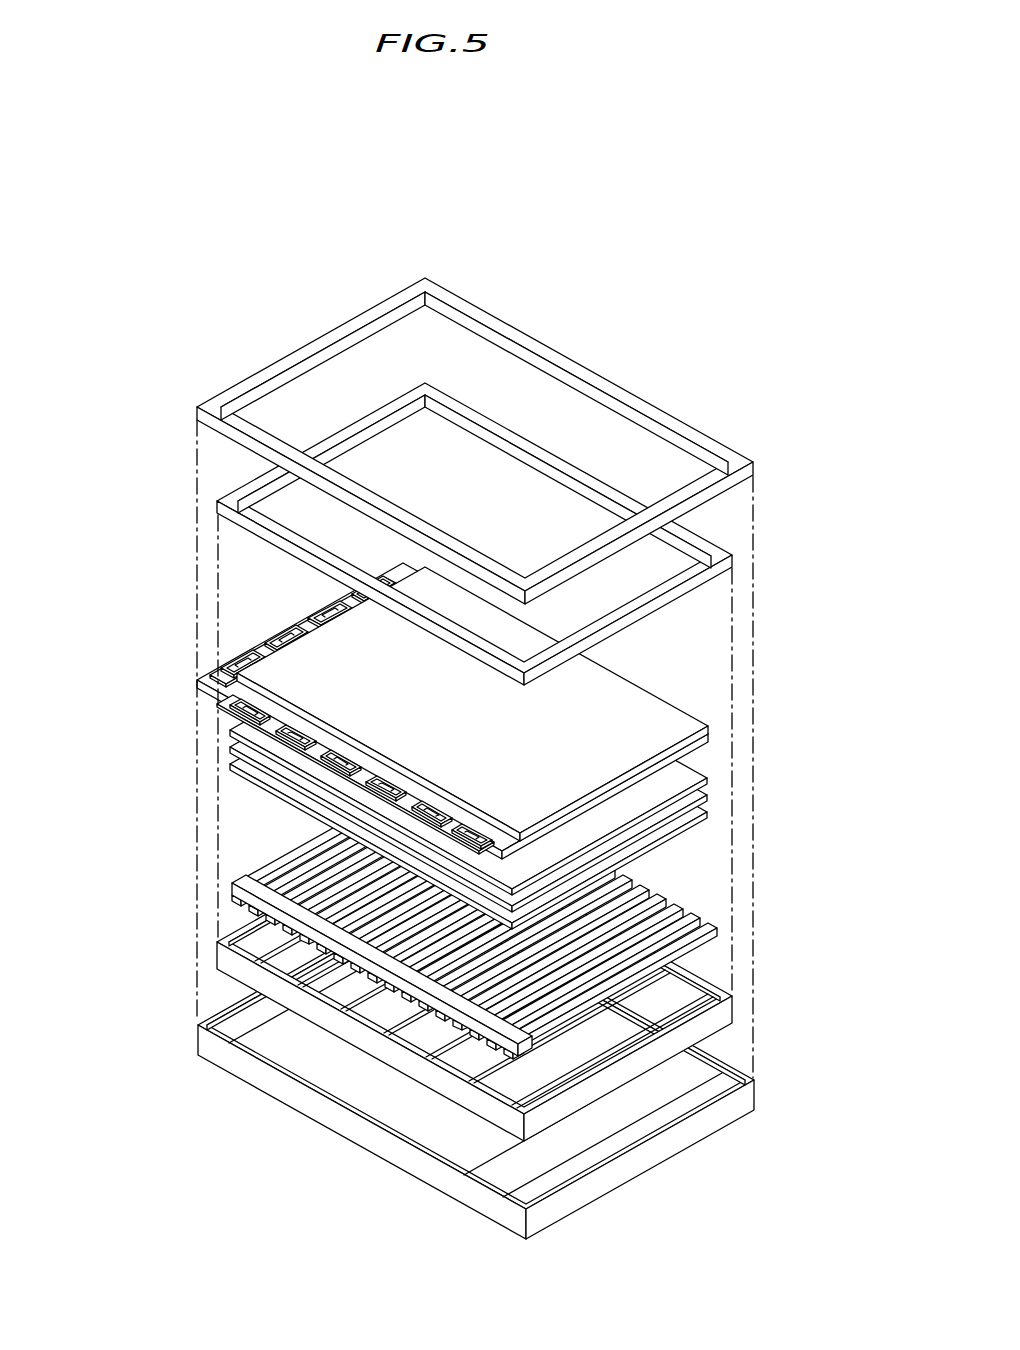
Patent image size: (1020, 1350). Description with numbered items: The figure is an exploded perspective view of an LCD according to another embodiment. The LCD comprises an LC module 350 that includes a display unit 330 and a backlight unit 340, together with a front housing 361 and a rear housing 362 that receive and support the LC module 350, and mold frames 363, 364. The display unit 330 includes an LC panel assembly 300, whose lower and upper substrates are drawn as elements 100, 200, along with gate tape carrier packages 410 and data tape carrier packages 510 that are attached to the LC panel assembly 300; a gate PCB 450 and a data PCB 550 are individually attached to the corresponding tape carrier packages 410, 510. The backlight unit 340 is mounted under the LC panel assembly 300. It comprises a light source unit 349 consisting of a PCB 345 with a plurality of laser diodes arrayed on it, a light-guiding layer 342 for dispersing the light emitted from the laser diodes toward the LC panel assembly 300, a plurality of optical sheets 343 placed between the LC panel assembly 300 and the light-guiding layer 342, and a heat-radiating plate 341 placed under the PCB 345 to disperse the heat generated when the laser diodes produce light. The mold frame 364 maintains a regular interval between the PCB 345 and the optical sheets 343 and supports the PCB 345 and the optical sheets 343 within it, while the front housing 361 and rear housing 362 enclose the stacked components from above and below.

The first substrate 100 is at (745, 751).
The second substrate 200 is at (712, 728).
The LC panel assembly 300 is at (473, 711).
The display unit 330 is at (511, 534).
The backlight unit 340 is at (501, 888).
The heat-radiating plate 341 is at (385, 985).
The light-guiding layer 342 is at (232, 885).
The optical sheets 343 is at (518, 774).
The PCB 345 is at (236, 903).
The light source unit 349 is at (310, 959).
The LC module 350 is at (425, 735).
The front housing 361 is at (508, 332).
The rear housing 362 is at (640, 1160).
The mold frame 363 is at (690, 585).
The mold frame 364 is at (658, 1057).
The gate tape carrier packages 410 is at (275, 640).
The gate PCB 450 is at (312, 623).
The data tape carrier packages 510 is at (206, 690).
The data PCB 550 is at (213, 742).